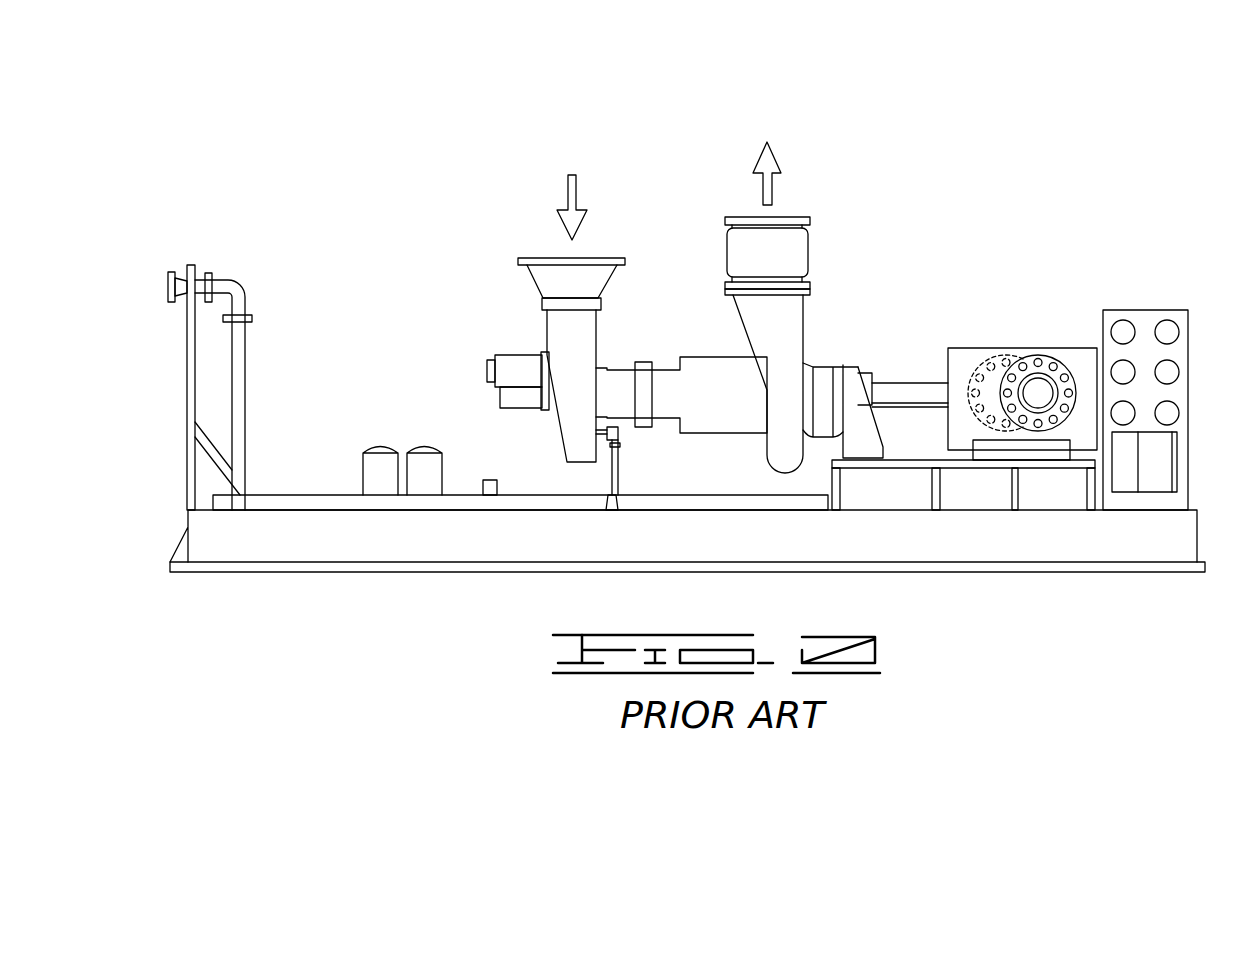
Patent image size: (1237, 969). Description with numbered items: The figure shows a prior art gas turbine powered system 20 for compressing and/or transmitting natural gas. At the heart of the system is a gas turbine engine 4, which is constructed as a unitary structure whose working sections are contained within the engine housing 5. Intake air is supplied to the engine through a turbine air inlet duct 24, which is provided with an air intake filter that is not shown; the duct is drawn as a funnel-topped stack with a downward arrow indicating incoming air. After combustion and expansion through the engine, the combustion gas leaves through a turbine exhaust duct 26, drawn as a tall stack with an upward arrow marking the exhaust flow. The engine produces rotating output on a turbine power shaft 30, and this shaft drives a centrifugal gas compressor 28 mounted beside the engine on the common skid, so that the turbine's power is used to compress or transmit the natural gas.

The gas turbine powered system 20 is at (262, 125).
The turbine air inlet duct 24 is at (548, 345).
The gas turbine engine 4 is at (681, 354).
The engine housing 5 is at (670, 367).
The turbine exhaust duct 26 is at (810, 362).
The centrifugal gas compressor 28 is at (1070, 360).
The turbine power shaft 30 is at (918, 380).